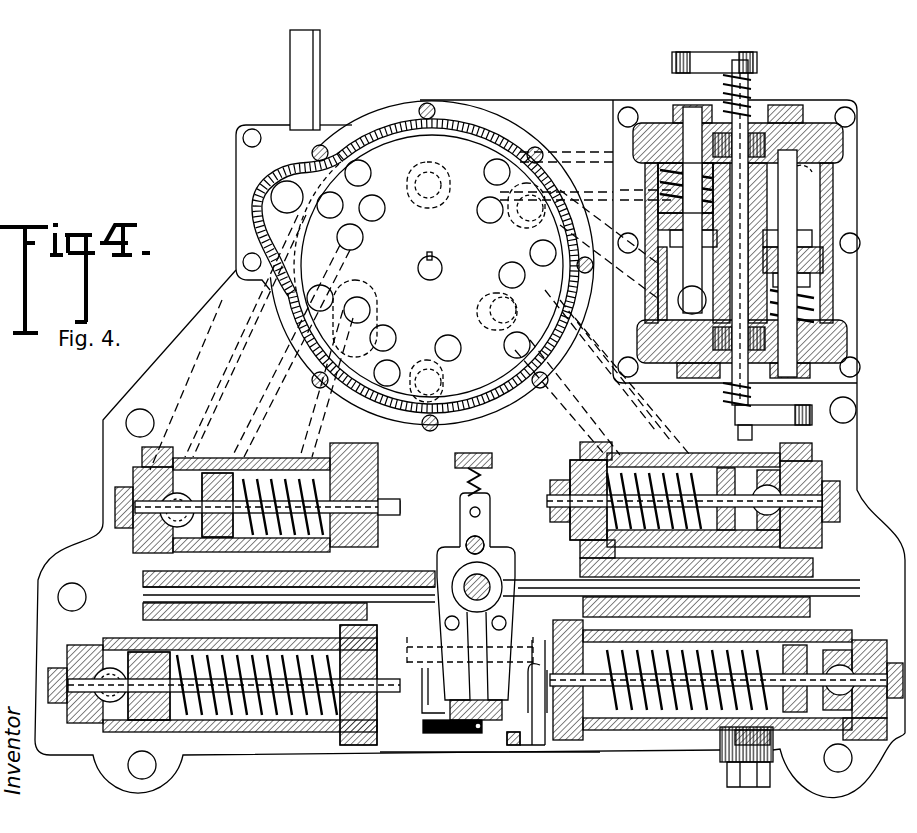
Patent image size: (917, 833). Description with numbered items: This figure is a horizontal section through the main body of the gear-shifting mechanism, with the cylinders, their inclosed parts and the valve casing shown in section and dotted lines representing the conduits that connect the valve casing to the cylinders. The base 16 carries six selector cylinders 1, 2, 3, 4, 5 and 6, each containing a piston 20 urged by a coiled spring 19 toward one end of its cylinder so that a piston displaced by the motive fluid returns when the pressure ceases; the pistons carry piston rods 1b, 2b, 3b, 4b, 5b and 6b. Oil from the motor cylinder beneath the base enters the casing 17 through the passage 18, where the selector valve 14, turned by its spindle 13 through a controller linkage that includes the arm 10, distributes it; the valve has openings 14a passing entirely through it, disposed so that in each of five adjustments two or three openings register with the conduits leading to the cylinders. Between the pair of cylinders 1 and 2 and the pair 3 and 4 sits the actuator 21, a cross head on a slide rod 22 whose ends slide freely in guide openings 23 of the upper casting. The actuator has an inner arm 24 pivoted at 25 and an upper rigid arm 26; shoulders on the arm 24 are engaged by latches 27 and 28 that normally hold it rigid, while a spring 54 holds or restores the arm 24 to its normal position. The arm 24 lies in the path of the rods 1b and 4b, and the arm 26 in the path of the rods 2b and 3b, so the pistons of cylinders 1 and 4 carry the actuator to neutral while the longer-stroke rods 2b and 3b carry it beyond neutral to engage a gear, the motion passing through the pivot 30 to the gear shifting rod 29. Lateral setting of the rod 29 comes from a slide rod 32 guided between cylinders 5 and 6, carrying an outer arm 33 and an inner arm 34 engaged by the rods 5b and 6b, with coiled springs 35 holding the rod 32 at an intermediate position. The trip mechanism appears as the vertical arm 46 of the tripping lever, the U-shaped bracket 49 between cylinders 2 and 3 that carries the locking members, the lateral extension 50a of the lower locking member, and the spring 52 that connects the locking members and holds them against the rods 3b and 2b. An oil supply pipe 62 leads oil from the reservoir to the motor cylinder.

The selector cylinder 1 is at (182, 485).
The piston rod 1b is at (388, 505).
The selector cylinder 2 is at (112, 665).
The piston rod 2b is at (355, 745).
The selector cylinder 3 is at (725, 705).
The piston rod 3b is at (672, 725).
The selector cylinder 4 is at (665, 475).
The piston rod 4b is at (598, 460).
The selector cylinder 5 is at (672, 290).
The piston rod 5b is at (645, 175).
The selector cylinder 6 is at (818, 290).
The piston rod 6b is at (797, 215).
The arm 10 is at (477, 641).
The spindle 13 is at (443, 268).
The selector valve 14 is at (431, 272).
The openings 14a is at (372, 200).
The base 16 is at (178, 343).
The casing 17 is at (490, 128).
The passage 18 is at (283, 197).
The coiled springs 19 is at (275, 480).
The pistons 20 is at (222, 480).
The actuator 21 is at (498, 572).
The slide rod 22 is at (520, 590).
The guide openings 23 is at (100, 542).
The inner arm 24 is at (482, 540).
The pivot 25 is at (485, 548).
The rigid arm 26 is at (470, 655).
The latch 27 is at (440, 560).
The latch 28 is at (502, 585).
The gear shifting rod 29 is at (445, 623).
The pivot connection 30 is at (462, 590).
The slide rod 32 is at (750, 228).
The outer arm 33 is at (712, 65).
The inner arm 34 is at (812, 418).
The coiled springs 35 is at (755, 93).
The vertical arm 46 is at (505, 745).
The U-shaped bracket 49 is at (515, 750).
The lateral extension 50a is at (540, 748).
The spring 52 is at (468, 740).
The spring 54 is at (492, 470).
The oil supply pipe 62 is at (312, 88).